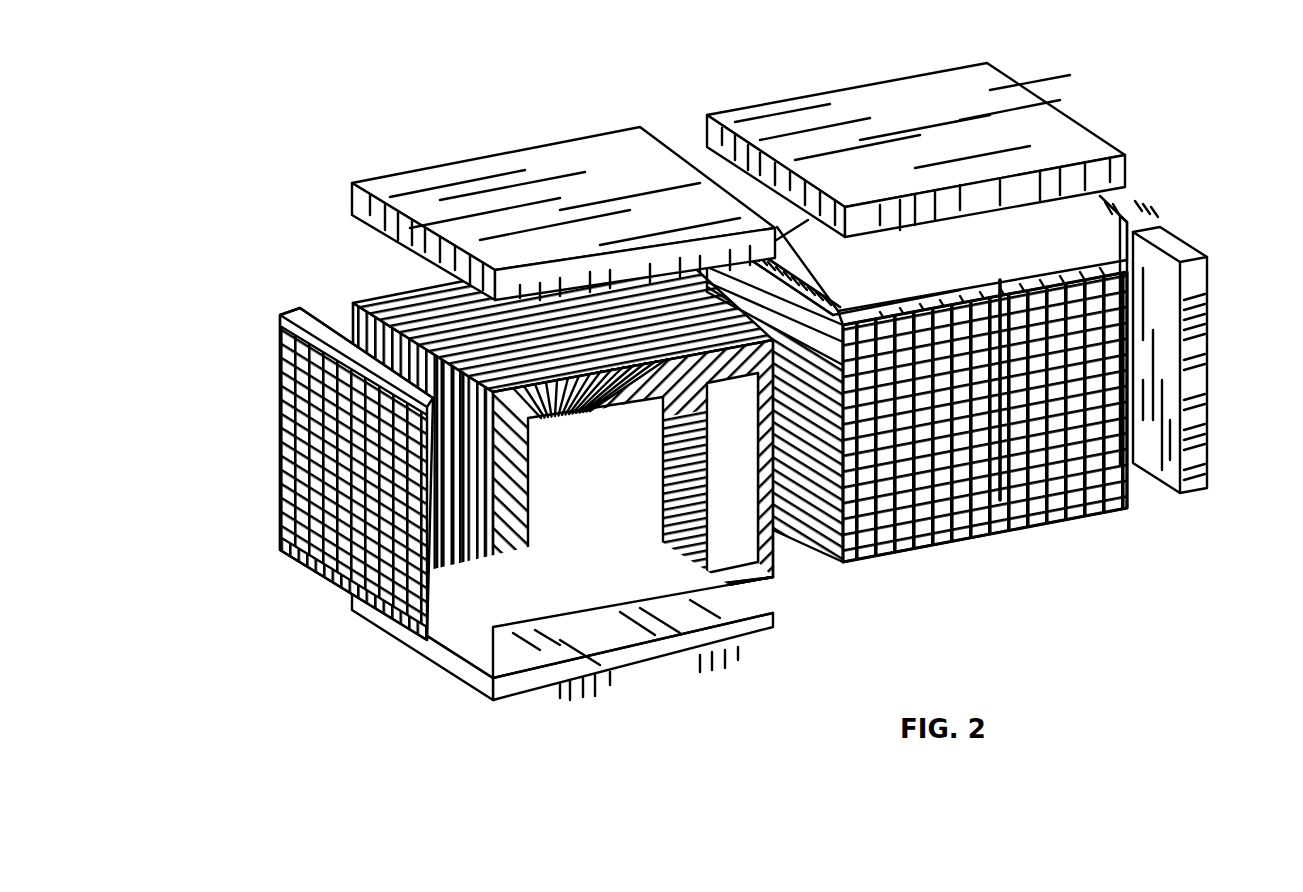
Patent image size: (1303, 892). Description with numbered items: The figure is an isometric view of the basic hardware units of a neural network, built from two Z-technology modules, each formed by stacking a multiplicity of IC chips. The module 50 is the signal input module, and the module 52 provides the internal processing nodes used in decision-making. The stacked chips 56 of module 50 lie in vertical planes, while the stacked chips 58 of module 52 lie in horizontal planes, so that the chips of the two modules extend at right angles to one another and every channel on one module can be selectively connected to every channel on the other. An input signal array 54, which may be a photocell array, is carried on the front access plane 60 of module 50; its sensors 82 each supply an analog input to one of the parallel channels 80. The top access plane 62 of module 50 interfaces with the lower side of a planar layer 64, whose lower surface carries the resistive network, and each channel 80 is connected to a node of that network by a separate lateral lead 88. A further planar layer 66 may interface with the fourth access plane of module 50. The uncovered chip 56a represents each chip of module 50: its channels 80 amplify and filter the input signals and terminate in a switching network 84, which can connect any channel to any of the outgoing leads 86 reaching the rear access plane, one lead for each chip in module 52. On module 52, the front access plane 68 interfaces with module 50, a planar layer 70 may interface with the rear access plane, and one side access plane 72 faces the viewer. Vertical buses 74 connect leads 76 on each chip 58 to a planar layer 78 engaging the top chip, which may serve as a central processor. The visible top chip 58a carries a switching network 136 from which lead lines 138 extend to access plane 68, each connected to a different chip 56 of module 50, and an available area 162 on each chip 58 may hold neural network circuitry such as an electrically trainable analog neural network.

The signal input module 50 is at (657, 521).
The processing module 52 is at (1013, 545).
The input signal array 54 is at (305, 474).
The stacked chips 56 is at (477, 615).
The chip 56a is at (683, 567).
The stacked chips 58 is at (1123, 350).
The top chip 58a is at (1051, 234).
The front access plane 60 is at (345, 332).
The top access plane 62 is at (405, 300).
The planar layer 64 is at (473, 172).
The planar layer 66 is at (673, 652).
The front access plane 68 is at (820, 497).
The planar layer 70 is at (1143, 470).
The side access plane 72 is at (940, 487).
The vertical buses 74 is at (1087, 493).
The leads 76 is at (1020, 301).
The CPU planar layer 78 is at (1018, 103).
The parallel channels 80 is at (663, 477).
The sensors 82 is at (322, 555).
The switching network 84 is at (748, 486).
The outgoing leads 86 is at (770, 535).
The lateral leads 88 is at (647, 400).
The switching network 136 is at (820, 287).
The lead lines 138 is at (837, 313).
The available area 162 is at (1018, 248).